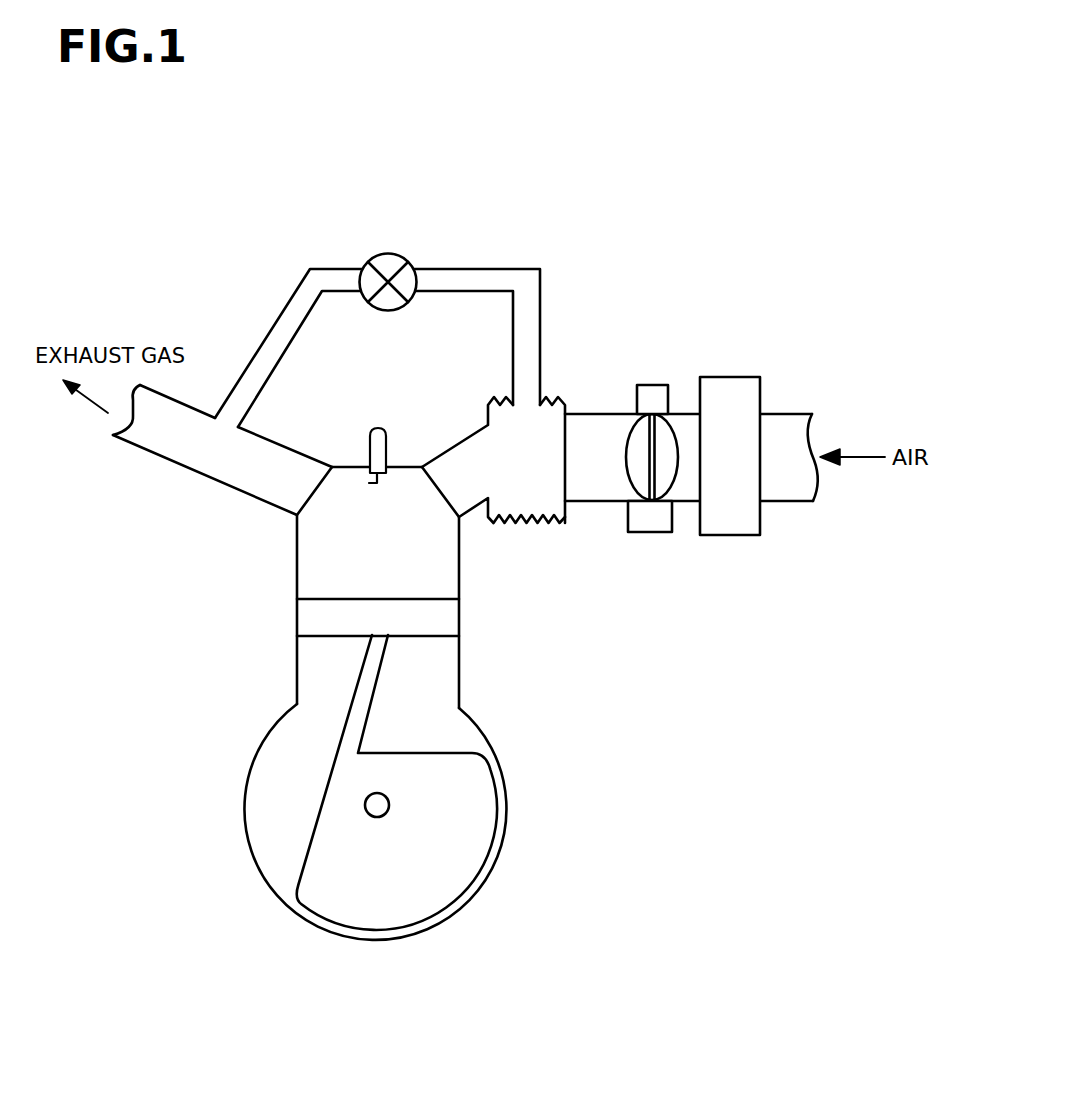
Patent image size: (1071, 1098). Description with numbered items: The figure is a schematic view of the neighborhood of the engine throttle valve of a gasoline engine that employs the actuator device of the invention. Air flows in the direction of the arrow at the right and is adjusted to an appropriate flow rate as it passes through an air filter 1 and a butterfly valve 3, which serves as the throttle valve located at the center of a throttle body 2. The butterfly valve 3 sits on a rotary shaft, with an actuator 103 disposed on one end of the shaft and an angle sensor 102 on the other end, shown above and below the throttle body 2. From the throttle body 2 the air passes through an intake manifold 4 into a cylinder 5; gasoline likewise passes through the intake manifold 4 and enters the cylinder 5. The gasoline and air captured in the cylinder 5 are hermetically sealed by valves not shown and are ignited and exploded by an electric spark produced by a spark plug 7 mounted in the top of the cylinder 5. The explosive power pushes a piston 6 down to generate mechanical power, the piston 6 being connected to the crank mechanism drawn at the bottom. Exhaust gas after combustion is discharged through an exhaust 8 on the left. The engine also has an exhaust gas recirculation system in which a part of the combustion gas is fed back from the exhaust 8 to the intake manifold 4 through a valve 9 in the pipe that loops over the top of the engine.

The air filter 1 is at (731, 393).
The throttle body 2 is at (570, 542).
The butterfly valve 3 is at (628, 440).
The intake manifold 4 is at (565, 542).
The cylinder 5 is at (320, 566).
The piston 6 is at (320, 620).
The spark plug 7 is at (378, 427).
The exhaust 8 is at (190, 450).
The valve 9 is at (393, 252).
The angle sensor 102 is at (653, 385).
The actuator 103 is at (668, 517).